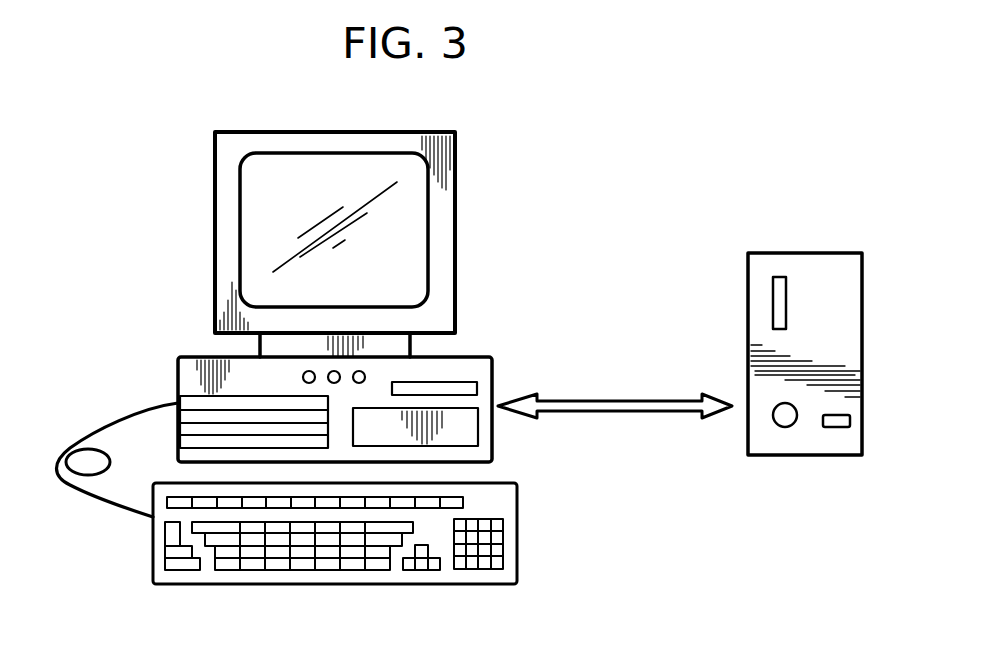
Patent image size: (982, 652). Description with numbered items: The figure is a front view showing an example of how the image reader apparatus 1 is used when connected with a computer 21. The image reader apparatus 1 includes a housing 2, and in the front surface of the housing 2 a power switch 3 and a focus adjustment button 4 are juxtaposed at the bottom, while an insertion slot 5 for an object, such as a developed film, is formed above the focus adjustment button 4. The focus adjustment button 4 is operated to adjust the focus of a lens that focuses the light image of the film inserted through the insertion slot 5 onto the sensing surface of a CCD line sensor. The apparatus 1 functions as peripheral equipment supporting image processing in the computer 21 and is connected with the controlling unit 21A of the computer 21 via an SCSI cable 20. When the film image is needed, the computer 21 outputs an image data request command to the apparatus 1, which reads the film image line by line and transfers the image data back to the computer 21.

The computer 21 is at (472, 178).
The controlling unit 21A is at (470, 357).
The SCSI cable 20 is at (628, 403).
The image reader apparatus 1 is at (770, 345).
The housing 2 is at (826, 268).
The power switch 3 is at (836, 428).
The focus adjustment button 4 is at (785, 420).
The insertion slot 5 is at (776, 277).